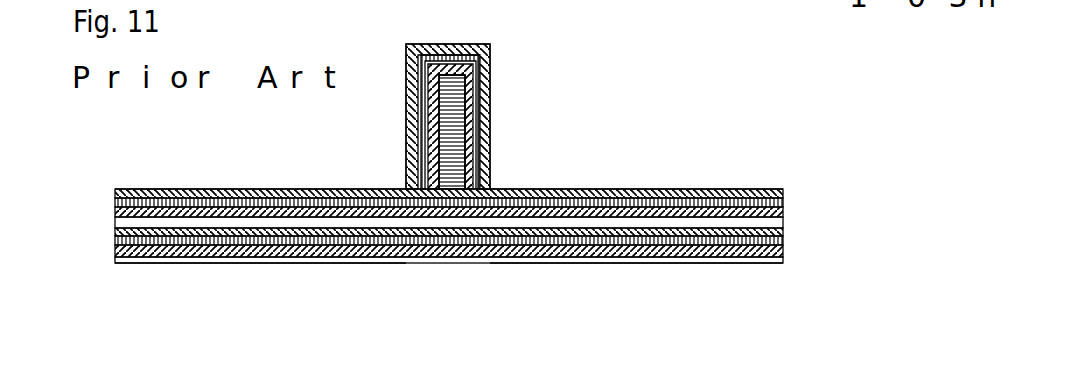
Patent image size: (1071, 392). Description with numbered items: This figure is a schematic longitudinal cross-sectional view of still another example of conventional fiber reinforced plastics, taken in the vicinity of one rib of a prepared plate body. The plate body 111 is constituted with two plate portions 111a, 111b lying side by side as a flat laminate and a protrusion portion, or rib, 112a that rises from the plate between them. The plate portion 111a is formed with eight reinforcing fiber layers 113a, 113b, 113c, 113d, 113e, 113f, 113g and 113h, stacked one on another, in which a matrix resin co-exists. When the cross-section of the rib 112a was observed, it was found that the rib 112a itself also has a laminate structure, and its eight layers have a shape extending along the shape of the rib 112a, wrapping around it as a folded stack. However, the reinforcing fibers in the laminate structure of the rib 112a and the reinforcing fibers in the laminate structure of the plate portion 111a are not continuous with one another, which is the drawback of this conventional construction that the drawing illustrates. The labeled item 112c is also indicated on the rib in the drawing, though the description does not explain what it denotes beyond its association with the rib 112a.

The plate body 111 is at (375, 105).
The plate portion 111a is at (775, 187).
The plate portion 111b is at (383, 185).
The protrusion portion (rib) 112a is at (497, 173).
The core of post 112c is at (637, 108).
The reinforcing fiber layer 113a is at (783, 188).
The reinforcing fiber layer 113b is at (783, 195).
The reinforcing fiber layer 113c is at (783, 204).
The reinforcing fiber layer 113d is at (783, 215).
The reinforcing fiber layer 113e is at (783, 232).
The reinforcing fiber layer 113f is at (783, 243).
The reinforcing fiber layer 113g is at (783, 253).
The reinforcing fiber layer 113h is at (783, 260).